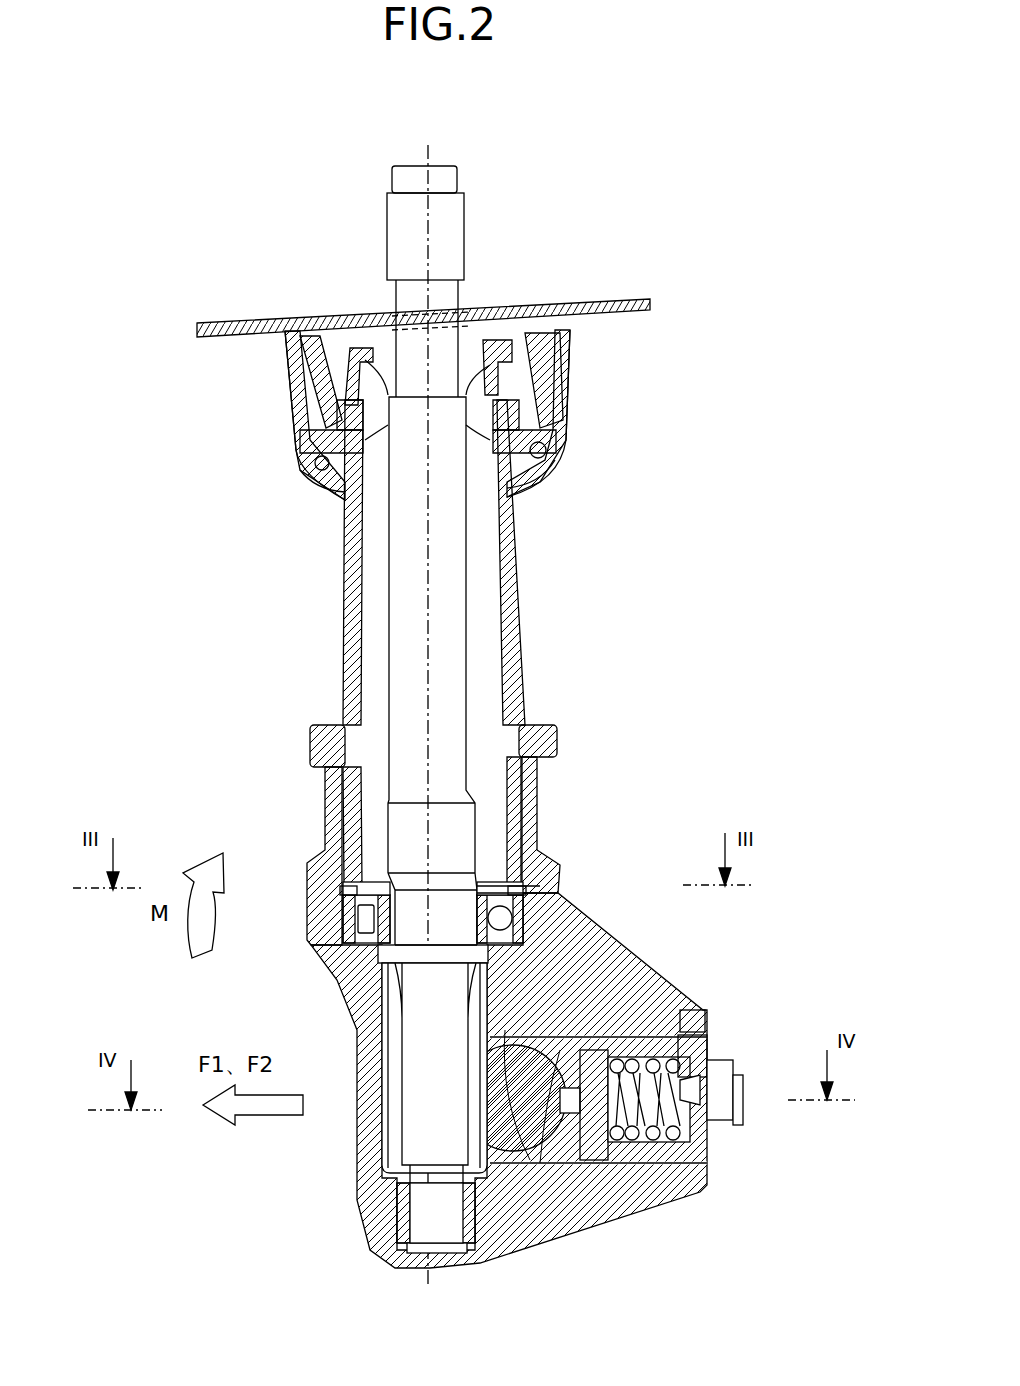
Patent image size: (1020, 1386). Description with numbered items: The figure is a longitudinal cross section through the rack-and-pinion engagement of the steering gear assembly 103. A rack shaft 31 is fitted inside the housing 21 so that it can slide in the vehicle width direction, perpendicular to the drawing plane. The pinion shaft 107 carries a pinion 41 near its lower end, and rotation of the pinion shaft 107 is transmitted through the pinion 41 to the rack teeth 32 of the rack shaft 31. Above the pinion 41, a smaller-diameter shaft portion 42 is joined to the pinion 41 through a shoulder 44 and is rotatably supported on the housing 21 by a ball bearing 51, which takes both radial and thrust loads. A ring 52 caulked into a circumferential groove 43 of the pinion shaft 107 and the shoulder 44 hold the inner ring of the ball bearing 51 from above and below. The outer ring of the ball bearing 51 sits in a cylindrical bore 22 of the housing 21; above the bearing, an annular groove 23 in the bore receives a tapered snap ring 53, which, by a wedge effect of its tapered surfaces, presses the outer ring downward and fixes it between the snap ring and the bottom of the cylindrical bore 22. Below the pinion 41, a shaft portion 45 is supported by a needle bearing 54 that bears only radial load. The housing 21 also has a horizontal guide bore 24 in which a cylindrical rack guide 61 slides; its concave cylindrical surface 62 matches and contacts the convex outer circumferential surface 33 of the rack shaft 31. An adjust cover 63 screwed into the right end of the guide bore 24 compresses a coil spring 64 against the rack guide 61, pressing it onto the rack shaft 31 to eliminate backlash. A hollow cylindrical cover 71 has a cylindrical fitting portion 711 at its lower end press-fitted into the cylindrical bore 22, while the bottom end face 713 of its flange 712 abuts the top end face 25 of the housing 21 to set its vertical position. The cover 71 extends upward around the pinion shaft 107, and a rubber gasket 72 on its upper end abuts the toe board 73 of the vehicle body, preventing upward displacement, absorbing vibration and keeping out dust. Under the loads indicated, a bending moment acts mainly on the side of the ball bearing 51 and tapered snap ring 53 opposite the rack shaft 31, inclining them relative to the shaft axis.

The pinion shaft 107 is at (443, 178).
The toe board 73 is at (230, 323).
The rubber gasket 72 is at (557, 378).
The steering gear assembly 103 is at (296, 588).
The cover 71 is at (512, 657).
The flange 712 is at (543, 731).
The bottom end face 713 is at (548, 760).
The cylindrical fitting portion 711 is at (515, 837).
The top end face 25 is at (325, 752).
The groove 43 is at (410, 885).
The tapered snap ring 53 is at (343, 890).
The shaft portion 42 is at (363, 917).
The cylindrical bore 22 is at (345, 933).
The ring 52 is at (530, 882).
The annular groove 23 is at (540, 887).
The ball bearing 51 is at (502, 918).
The housing 21 is at (603, 958).
The coil spring 64 is at (680, 1030).
The pinion 41 is at (395, 1048).
The shoulder 44 is at (410, 940).
The adjust cover 63 is at (735, 1072).
The rack teeth 32 is at (480, 1118).
The shaft portion 45 is at (423, 1202).
The needle bearing 54 is at (407, 1222).
The rack shaft 31 is at (505, 1030).
The outer circumferential surface 33 is at (540, 1168).
The concave cylindrical surface 62 is at (600, 1160).
The rack guide 61 is at (632, 1150).
The guide bore 24 is at (638, 1142).